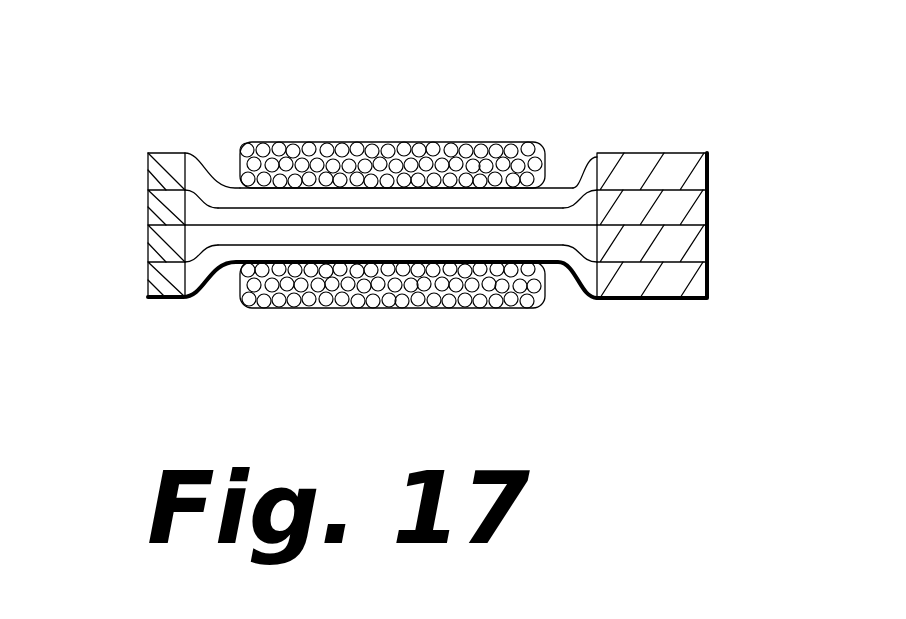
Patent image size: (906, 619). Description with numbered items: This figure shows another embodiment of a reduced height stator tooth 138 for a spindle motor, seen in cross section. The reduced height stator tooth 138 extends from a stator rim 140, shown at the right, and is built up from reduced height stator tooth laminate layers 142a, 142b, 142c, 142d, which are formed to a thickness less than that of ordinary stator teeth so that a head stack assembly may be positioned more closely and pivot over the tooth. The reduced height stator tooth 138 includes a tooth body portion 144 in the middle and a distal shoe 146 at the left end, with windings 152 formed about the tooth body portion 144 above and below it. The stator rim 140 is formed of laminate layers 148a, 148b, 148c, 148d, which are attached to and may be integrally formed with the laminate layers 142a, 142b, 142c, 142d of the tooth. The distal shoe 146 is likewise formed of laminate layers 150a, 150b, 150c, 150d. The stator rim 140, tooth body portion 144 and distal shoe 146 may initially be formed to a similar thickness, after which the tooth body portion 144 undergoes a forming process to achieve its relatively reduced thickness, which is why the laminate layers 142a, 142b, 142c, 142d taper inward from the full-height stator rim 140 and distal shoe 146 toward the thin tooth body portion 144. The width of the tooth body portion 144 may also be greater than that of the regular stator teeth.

The reduced height stator tooth 138 is at (597, 366).
The stator rim 140 is at (707, 83).
The reduced height stator tooth laminate layer 142a is at (196, 181).
The reduced height stator tooth laminate layer 142b is at (585, 212).
The reduced height stator tooth laminate layer 142c is at (193, 246).
The reduced height stator tooth laminate layer 142d is at (588, 272).
The tooth body portion 144 is at (597, 83).
The distal shoe 146 is at (185, 83).
The stator rim laminate layer 148a is at (707, 173).
The stator rim laminate layer 148b is at (707, 211).
The stator rim laminate layer 148c is at (707, 249).
The stator rim laminate layer 148d is at (707, 287).
The distal shoe laminate layer 150a is at (149, 173).
The distal shoe laminate layer 150b is at (149, 212).
The distal shoe laminate layer 150c is at (149, 250).
The distal shoe laminate layer 150d is at (149, 288).
The windings 152 is at (391, 150).